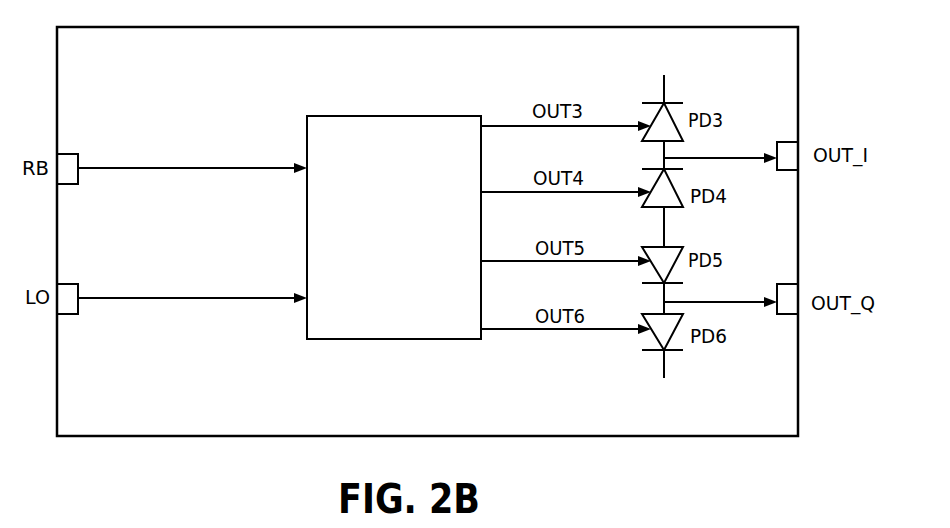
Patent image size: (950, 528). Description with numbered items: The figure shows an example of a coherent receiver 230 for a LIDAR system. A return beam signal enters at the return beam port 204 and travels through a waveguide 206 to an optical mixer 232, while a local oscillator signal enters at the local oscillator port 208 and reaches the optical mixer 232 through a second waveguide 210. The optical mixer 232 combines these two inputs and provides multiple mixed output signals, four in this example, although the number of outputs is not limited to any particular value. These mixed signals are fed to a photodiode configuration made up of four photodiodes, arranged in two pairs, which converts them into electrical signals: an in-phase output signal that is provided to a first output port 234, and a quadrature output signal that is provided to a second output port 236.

The return beam port 204 is at (78, 154).
The waveguide 206 is at (245, 168).
The local oscillator port 208 is at (78, 284).
The waveguide 210 is at (245, 298).
The coherent receiver 230 is at (527, 75).
The optical mixer 232 is at (431, 256).
The output port 234 is at (777, 142).
The output port 236 is at (777, 284).